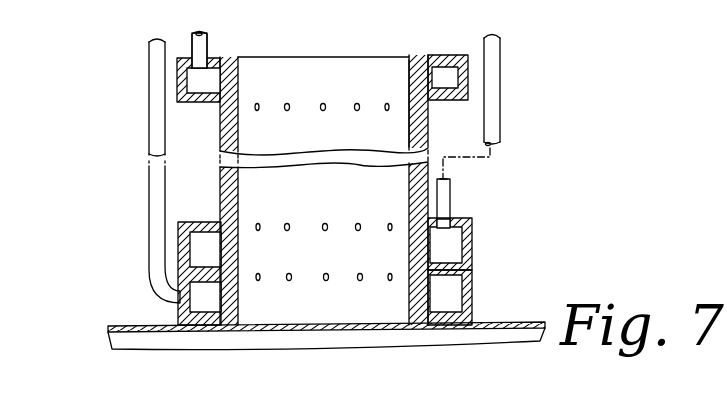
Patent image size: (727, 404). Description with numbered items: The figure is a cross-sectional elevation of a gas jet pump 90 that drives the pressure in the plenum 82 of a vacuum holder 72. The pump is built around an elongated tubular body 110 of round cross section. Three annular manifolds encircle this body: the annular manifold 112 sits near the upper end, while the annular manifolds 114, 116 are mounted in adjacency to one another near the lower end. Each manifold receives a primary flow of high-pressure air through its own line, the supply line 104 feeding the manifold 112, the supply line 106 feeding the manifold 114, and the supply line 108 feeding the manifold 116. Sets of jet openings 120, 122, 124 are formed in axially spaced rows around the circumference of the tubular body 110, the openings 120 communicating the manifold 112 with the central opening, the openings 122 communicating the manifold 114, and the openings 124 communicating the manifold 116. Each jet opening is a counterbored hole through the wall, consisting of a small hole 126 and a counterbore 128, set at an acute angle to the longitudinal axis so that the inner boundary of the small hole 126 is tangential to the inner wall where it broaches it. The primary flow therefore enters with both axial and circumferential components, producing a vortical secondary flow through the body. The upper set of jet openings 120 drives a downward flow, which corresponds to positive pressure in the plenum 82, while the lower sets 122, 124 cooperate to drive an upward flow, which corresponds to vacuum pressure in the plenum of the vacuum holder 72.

The vacuum holder 72 is at (130, 325).
The plenum 82 is at (140, 340).
The gas jet pump 90 is at (508, 69).
The supply line 104 is at (202, 46).
The supply line 106 is at (496, 100).
The supply line 108 is at (156, 95).
The tubular body 110 is at (230, 132).
The annular manifold 112 is at (452, 100).
The annular manifold 114 is at (468, 243).
The annular manifold 116 is at (468, 298).
The jet openings 120 is at (357, 104).
The jet openings 122 is at (322, 224).
The jet openings 124 is at (358, 281).
The small hole 126 is at (412, 106).
The counterbore 128 is at (431, 72).